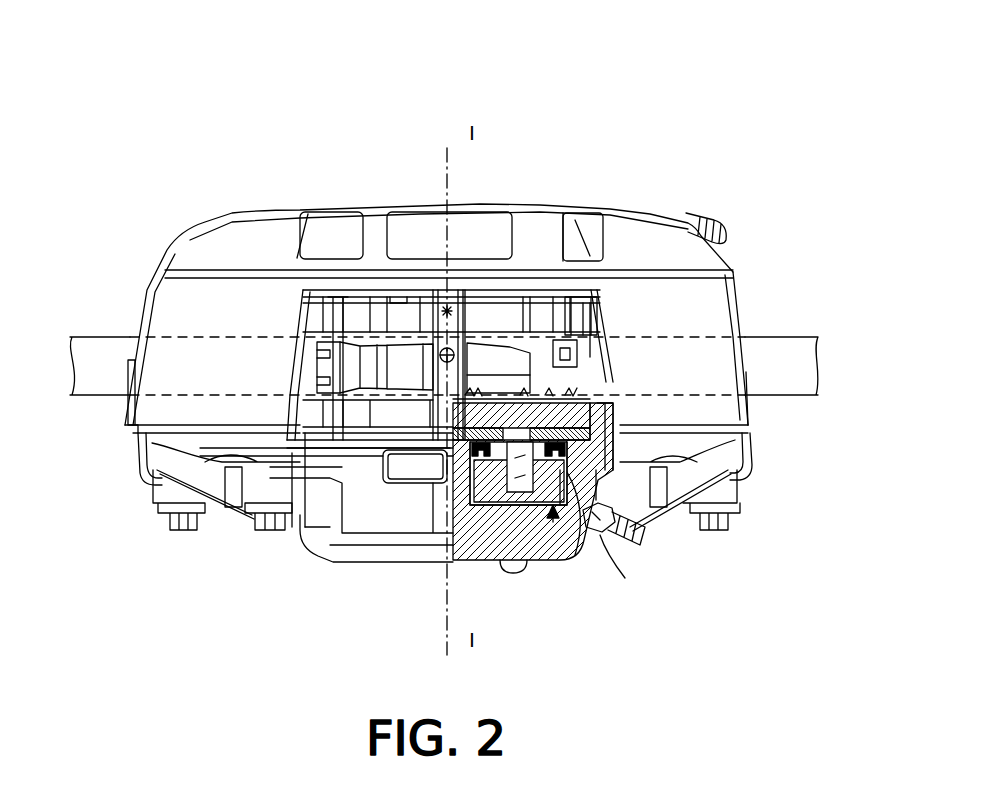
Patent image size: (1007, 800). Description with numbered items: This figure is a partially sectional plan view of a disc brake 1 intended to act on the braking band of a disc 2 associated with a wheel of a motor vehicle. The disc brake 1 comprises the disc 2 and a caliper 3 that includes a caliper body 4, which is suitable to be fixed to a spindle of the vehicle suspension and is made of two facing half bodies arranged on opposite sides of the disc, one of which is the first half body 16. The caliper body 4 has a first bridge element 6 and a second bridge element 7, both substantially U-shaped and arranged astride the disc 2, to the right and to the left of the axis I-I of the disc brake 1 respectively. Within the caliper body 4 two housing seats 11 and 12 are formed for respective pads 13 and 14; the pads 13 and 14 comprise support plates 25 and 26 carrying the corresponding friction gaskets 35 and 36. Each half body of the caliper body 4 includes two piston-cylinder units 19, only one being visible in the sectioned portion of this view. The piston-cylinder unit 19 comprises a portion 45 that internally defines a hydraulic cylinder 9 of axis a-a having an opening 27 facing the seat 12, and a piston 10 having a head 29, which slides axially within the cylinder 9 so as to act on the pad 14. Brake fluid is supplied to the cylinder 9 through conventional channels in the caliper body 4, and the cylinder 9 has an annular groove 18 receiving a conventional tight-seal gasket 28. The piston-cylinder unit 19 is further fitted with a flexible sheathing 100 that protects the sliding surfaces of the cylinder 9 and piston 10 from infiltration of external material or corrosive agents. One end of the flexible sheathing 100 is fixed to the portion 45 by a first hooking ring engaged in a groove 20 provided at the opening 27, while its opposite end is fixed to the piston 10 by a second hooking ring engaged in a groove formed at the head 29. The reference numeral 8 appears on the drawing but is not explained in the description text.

The disc brake 1 is at (603, 120).
The disc 2 is at (113, 337).
The caliper 3 is at (270, 214).
The caliper body 4 is at (645, 218).
The first bridge element 6 is at (122, 424).
The second bridge element 7 is at (748, 372).
The piston 8 is at (480, 200).
The hydraulic cylinder 9 is at (497, 500).
The piston 10 is at (515, 510).
The housing seat 11 is at (318, 318).
The housing seat 12 is at (596, 402).
The pad 13 is at (583, 338).
The pad 14 is at (498, 362).
The first half body 16 is at (740, 288).
The annular groove 18 is at (470, 448).
The piston-cylinder unit 19 is at (562, 513).
The groove 20 is at (333, 562).
The support plate 25 is at (605, 527).
The support plate 26 is at (542, 300).
The opening 27 is at (630, 540).
The tight-seal gasket 28 is at (510, 500).
The head 29 is at (497, 427).
The friction gasket 35 is at (547, 420).
The friction gasket 36 is at (492, 313).
The portion 45 is at (555, 522).
The flexible sheathing 100 is at (552, 513).